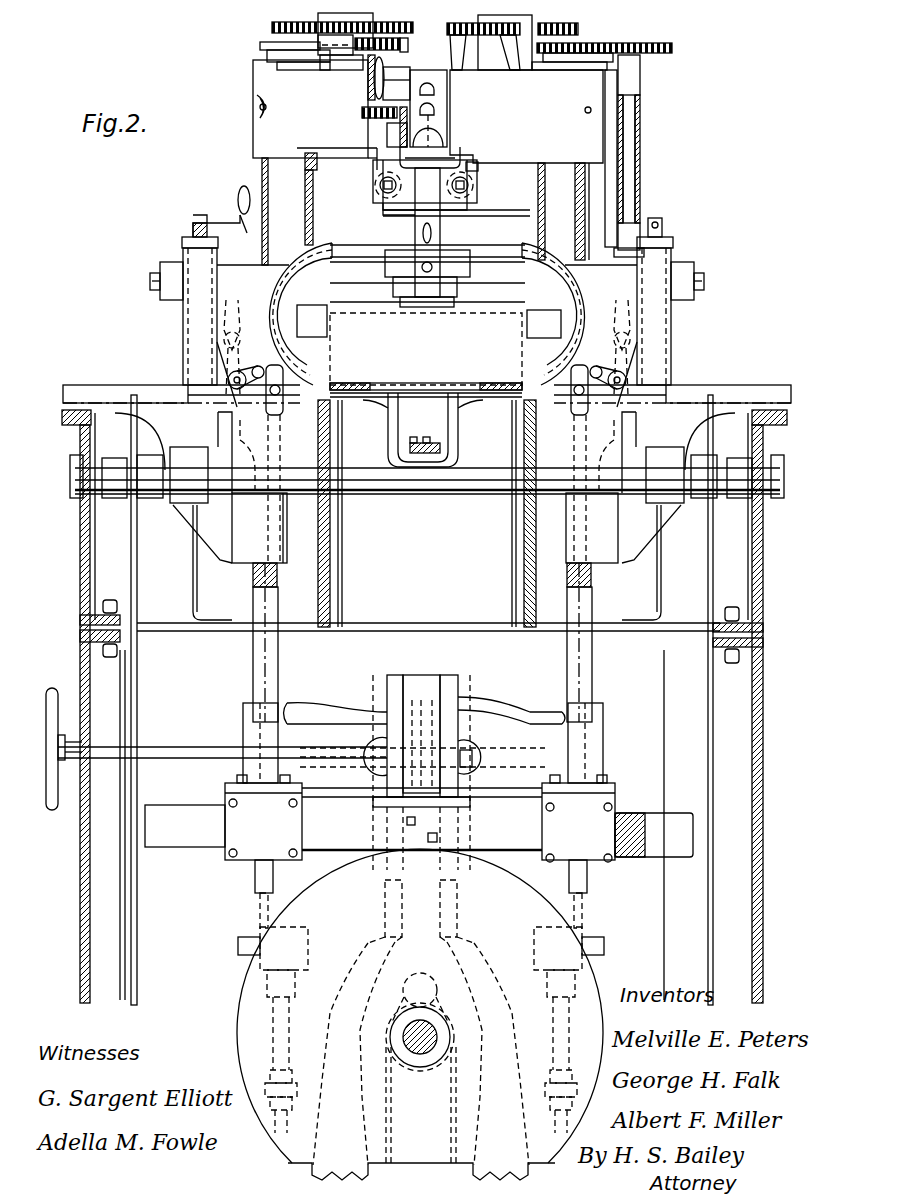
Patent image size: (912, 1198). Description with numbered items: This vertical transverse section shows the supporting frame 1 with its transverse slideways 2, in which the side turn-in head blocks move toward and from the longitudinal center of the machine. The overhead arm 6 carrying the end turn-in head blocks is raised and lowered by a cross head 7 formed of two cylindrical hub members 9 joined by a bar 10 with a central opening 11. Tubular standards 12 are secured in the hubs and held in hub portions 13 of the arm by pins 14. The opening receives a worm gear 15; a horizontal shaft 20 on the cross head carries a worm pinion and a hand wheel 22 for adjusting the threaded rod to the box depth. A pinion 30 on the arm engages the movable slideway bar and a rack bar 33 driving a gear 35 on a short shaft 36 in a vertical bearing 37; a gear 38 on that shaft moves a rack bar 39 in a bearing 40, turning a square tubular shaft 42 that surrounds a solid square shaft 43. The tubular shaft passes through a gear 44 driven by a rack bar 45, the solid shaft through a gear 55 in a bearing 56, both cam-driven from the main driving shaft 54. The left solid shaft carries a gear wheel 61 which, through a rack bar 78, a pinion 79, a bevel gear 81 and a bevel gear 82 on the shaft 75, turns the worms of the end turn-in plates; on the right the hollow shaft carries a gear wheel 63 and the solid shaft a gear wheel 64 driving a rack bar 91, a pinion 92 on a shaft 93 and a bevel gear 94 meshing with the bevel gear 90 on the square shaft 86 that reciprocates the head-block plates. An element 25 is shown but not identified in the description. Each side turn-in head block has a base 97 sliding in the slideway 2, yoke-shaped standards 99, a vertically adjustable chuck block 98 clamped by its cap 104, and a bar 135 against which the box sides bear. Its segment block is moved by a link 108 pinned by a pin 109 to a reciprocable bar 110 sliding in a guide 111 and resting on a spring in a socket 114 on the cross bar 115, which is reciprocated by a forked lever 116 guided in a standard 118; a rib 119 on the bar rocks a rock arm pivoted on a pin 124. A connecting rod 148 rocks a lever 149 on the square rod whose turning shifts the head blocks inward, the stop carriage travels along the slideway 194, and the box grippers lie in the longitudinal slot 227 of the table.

The supporting frame 1 is at (80, 607).
The transverse slideways 2 is at (70, 395).
The overhead arm 6 is at (447, 128).
The cross head 7 is at (480, 705).
The cylindrical hub members 9 is at (243, 712).
The bar 10 is at (368, 727).
The central opening 11 is at (466, 768).
The tubular vertical hollow standards 12 is at (345, 645).
The hub portions 13 is at (253, 135).
The pins 14 is at (258, 105).
The worm gear 15 is at (470, 755).
The horizontal shaft 20 is at (205, 760).
The hand wheel 22 is at (53, 800).
The bolt 25 is at (435, 87).
The pinion 30 is at (387, 133).
The rack bar 33 is at (435, 108).
The gear 35 is at (362, 115).
The short shaft 36 is at (368, 78).
The vertical bearing 37 is at (378, 95).
The gear 38 is at (404, 46).
The rack bar 39 is at (260, 45).
The bearing 40 is at (335, 45).
The square tubular shaft 42 is at (290, 878).
The solid square shaft 43 is at (274, 1028).
The gear 44 is at (308, 945).
The rack bar 45 is at (238, 946).
The main driving shaft 54 is at (424, 1045).
The gear 55 is at (297, 1090).
The bearing 56 is at (548, 1085).
The gear wheel 61 is at (272, 24).
The gear wheel 63 is at (585, 45).
The gear wheel 64 is at (565, 24).
The shaft 75 is at (380, 187).
The rack bar 78 is at (345, 24).
The pinion 79 is at (405, 38).
The bevel gear 81 is at (375, 172).
The bevel gear 82 is at (392, 198).
The square shaft 86 is at (472, 197).
The bevel gear 90 is at (470, 186).
The rack bar 91 is at (530, 20).
The pinion 92 is at (483, 35).
The shaft 93 is at (463, 135).
The bevel gear 94 is at (470, 168).
The head block base 97 is at (98, 385).
The chuck block 98 is at (222, 275).
The standards 99 is at (192, 335).
The cap 104 is at (162, 275).
The link 108 is at (300, 375).
The pin 109 is at (330, 418).
The vertically reciprocable bar 110 is at (272, 447).
The guide 111 is at (270, 520).
The socket 114 is at (250, 868).
The cross bar 115 is at (419, 822).
The forked lever 116 is at (428, 685).
The standard 118 is at (348, 985).
The rib portion 119 is at (245, 447).
The pin 124 is at (228, 377).
The bar 135 is at (328, 325).
The connecting rod 148 is at (138, 555).
The lever 149 is at (115, 462).
The slideway 194 is at (425, 437).
The longitudinal slot 227 is at (426, 386).